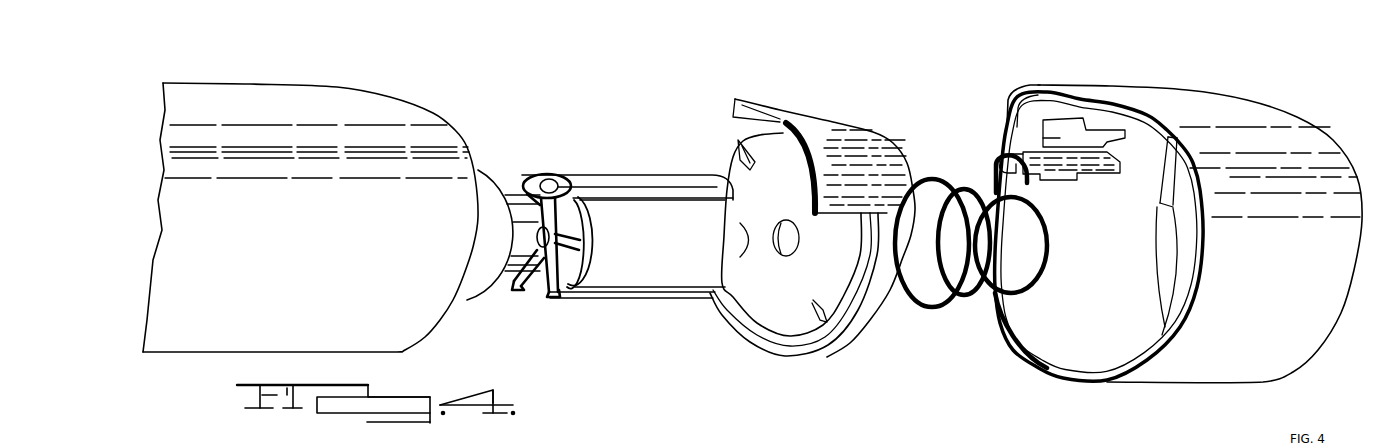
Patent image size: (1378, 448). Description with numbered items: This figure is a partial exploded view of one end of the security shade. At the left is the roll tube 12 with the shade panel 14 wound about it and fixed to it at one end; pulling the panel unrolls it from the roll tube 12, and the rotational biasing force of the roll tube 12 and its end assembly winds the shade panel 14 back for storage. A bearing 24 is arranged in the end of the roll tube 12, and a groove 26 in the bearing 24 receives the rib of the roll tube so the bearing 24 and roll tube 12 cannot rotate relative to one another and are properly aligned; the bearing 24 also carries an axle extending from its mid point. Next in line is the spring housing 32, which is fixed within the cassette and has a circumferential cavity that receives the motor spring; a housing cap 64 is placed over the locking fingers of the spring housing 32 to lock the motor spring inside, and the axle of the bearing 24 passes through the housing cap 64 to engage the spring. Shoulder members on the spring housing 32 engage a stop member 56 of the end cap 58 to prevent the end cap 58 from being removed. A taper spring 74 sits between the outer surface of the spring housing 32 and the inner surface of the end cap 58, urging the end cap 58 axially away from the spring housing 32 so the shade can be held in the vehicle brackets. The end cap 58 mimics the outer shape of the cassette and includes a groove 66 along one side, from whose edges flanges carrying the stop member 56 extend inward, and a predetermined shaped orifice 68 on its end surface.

The roll tube 12 is at (482, 283).
The shade panel 14 is at (289, 107).
The bearing 24 is at (617, 262).
The groove 26 is at (548, 187).
The spring housing 32 is at (836, 336).
The stop member 56 is at (1080, 118).
The end cap 58 is at (1265, 363).
The housing cap 64 is at (767, 282).
The groove 66 is at (1012, 145).
The orifice 68 is at (1183, 193).
The taper spring 74 is at (967, 297).